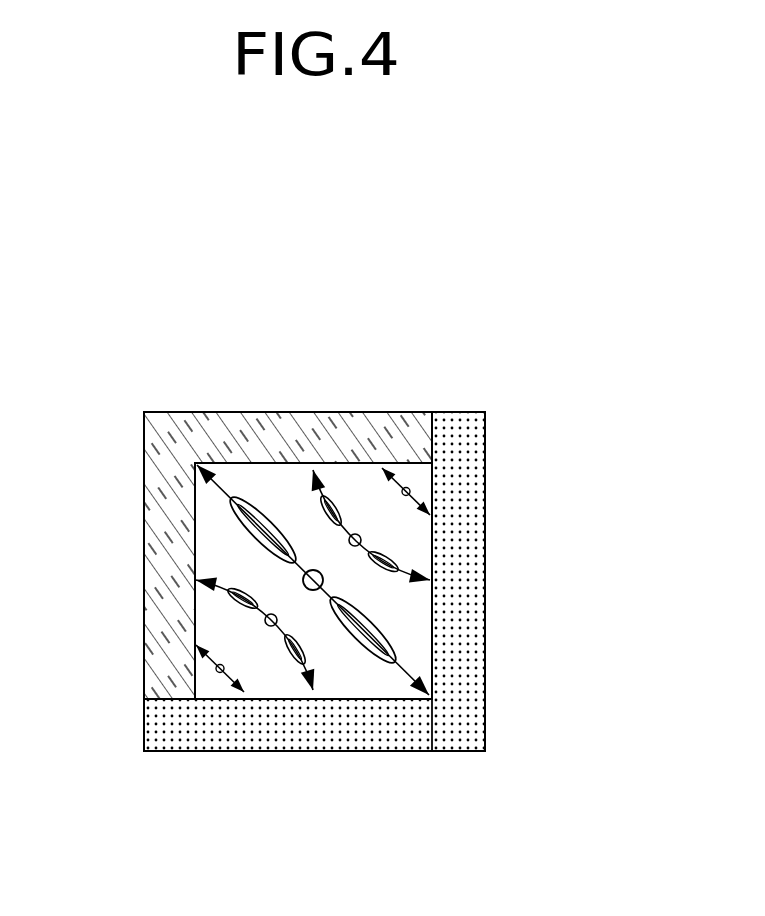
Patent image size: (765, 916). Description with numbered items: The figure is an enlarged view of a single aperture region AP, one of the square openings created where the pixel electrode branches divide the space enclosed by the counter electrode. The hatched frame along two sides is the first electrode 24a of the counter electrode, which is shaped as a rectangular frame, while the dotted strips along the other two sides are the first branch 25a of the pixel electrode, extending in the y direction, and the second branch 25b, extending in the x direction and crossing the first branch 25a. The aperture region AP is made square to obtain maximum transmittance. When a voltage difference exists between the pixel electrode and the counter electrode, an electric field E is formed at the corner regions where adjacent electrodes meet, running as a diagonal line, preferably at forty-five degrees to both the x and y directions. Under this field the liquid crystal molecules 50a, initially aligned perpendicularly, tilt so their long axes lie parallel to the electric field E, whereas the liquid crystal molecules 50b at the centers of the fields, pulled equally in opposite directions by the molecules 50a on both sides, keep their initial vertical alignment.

The first electrode 24a is at (323, 417).
The first branch 25a is at (477, 592).
The second branch 25b is at (336, 735).
The liquid crystal molecules 50a is at (258, 503).
The liquid crystal molecules 50b is at (303, 576).
The electric field E is at (271, 627).
The aperture region AP is at (353, 668).